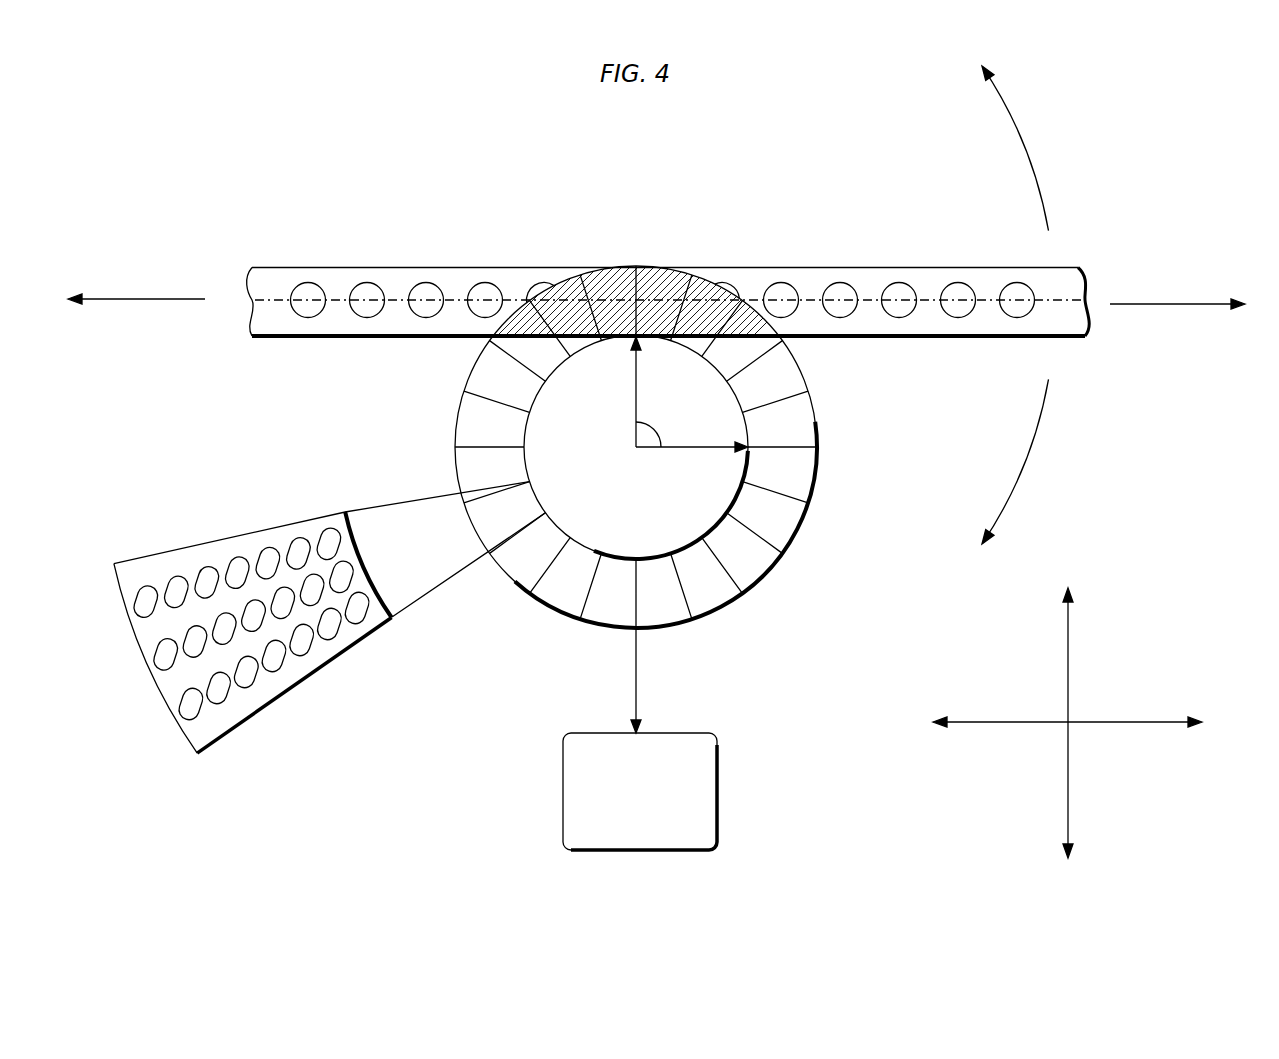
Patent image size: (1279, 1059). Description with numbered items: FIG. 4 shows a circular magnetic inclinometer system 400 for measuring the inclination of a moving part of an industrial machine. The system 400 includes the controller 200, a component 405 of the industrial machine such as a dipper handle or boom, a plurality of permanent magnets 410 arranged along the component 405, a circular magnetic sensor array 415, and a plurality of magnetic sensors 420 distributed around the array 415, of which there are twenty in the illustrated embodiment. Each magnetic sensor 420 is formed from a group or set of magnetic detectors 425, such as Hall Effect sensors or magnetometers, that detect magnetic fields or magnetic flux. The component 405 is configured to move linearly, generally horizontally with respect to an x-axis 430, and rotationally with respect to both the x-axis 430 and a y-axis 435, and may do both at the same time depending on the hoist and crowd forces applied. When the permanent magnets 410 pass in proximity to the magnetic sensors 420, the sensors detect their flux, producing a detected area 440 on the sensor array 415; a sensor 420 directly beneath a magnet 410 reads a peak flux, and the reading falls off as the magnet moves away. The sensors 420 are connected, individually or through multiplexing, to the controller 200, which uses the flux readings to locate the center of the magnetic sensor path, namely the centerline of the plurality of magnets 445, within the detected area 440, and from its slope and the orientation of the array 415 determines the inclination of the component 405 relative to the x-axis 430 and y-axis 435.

The circular magnetic inclinometer system 400 is at (307, 145).
The component of the industrial machine 405 is at (942, 268).
The permanent magnets 410 is at (368, 283).
The circular magnetic sensor array 415 is at (778, 562).
The magnetic sensors 420 is at (705, 602).
The magnetic detectors 425 is at (310, 648).
The x-axis 430 is at (1128, 723).
The y-axis 435 is at (1068, 665).
The detected area 440 is at (587, 273).
The centerline of the plurality of magnets 445 is at (808, 300).
The controller 200 is at (562, 792).